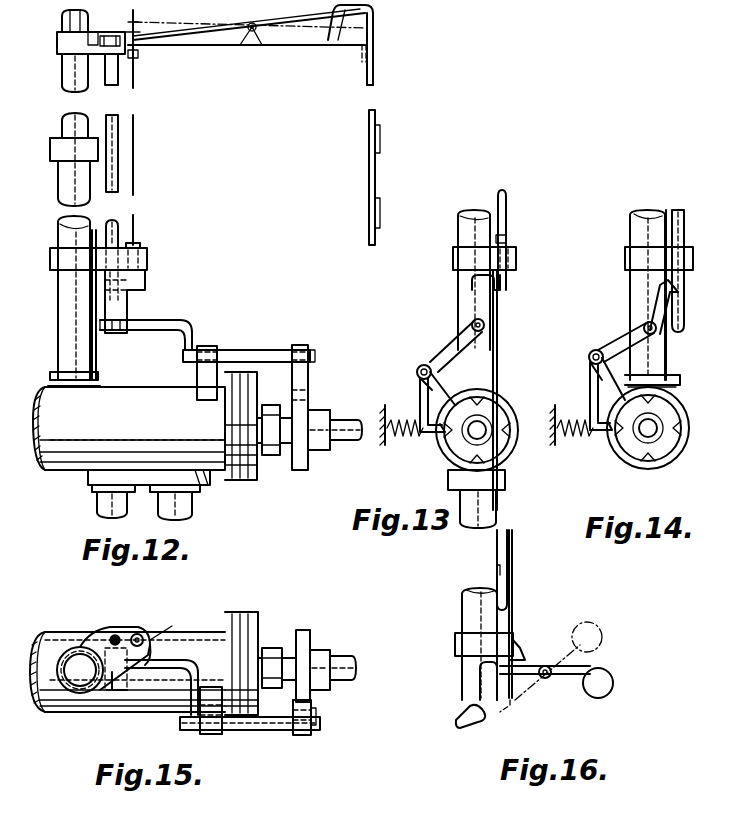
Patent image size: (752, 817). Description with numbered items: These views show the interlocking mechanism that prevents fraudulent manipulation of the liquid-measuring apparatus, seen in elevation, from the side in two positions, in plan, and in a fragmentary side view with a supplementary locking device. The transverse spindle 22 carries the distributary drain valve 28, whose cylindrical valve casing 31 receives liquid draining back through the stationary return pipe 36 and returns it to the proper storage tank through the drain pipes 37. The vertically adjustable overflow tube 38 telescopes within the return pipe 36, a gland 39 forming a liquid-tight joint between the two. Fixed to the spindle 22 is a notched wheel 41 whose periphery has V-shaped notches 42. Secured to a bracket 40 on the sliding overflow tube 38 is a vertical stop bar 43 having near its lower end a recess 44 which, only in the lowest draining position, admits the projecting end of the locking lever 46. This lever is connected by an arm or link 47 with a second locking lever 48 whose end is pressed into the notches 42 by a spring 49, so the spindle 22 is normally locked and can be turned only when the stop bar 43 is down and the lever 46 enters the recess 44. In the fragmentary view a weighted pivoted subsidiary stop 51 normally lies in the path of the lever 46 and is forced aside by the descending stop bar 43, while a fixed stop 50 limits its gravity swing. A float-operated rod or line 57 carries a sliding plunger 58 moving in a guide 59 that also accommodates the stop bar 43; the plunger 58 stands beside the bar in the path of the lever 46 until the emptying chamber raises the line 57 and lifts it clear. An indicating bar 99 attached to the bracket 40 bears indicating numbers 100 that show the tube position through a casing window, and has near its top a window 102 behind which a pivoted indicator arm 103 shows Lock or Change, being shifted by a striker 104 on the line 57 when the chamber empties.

In FIG. 12, the transverse spindle 22 is at (340, 440).
In FIG. 13, the transverse spindle 22 is at (472, 438).
In FIG. 14, the transverse spindle 22 is at (643, 435).
In FIG. 15, the transverse spindle 22 is at (352, 670).
In FIG. 12, the distributary drain valve 28 is at (50, 480).
In FIG. 15, the distributary drain valve 28 is at (55, 614).
In FIG. 12, the cylindrical valve casing 31 is at (148, 426).
In FIG. 14, the cylindrical valve casing 31 is at (690, 432).
In FIG. 15, the cylindrical valve casing 31 is at (149, 663).
In FIG. 12, the stationary return pipe 36 is at (58, 353).
In FIG. 13, the stationary return pipe 36 is at (474, 210).
In FIG. 14, the stationary return pipe 36 is at (647, 210).
In FIG. 15, the stationary return pipe 36 is at (70, 693).
In FIG. 16, the stationary return pipe 36 is at (462, 600).
In FIG. 12, the drain pipes 37 is at (160, 498).
In FIG. 12, the overflow tube 38 is at (65, 87).
In FIG. 12, the gland 39 is at (55, 150).
In FIG. 12, the bracket 40 is at (57, 45).
In FIG. 12, the notched wheel 41 is at (296, 450).
In FIG. 13, the notched wheel 41 is at (495, 405).
In FIG. 14, the notched wheel 41 is at (675, 455).
In FIG. 15, the notched wheel 41 is at (308, 635).
In FIG. 12, the notches 42 is at (306, 455).
In FIG. 13, the notches 42 is at (505, 455).
In FIG. 15, the notches 42 is at (322, 655).
In FIG. 12, the stop bar 43 is at (135, 160).
In FIG. 13, the stop bar 43 is at (507, 198).
In FIG. 14, the stop bar 43 is at (682, 212).
In FIG. 15, the stop bar 43 is at (114, 635).
In FIG. 16, the stop bar 43 is at (514, 567).
In FIG. 12, the recess 44 is at (110, 240).
In FIG. 13, the recess 44 is at (507, 238).
In FIG. 16, the recess 44 is at (496, 570).
In FIG. 12, the locking lever 46 is at (133, 290).
In FIG. 13, the locking lever 46 is at (472, 286).
In FIG. 14, the locking lever 46 is at (656, 296).
In FIG. 15, the locking lever 46 is at (120, 692).
In FIG. 16, the locking lever 46 is at (480, 680).
In FIG. 12, the arm or link 47 is at (190, 324).
In FIG. 13, the arm or link 47 is at (452, 345).
In FIG. 14, the arm or link 47 is at (618, 340).
In FIG. 15, the arm or link 47 is at (162, 690).
In FIG. 16, the arm or link 47 is at (462, 714).
In FIG. 12, the second locking lever 48 is at (308, 378).
In FIG. 13, the second locking lever 48 is at (418, 390).
In FIG. 14, the second locking lever 48 is at (590, 384).
In FIG. 15, the second locking lever 48 is at (312, 733).
In FIG. 13, the spring 49 is at (400, 435).
In FIG. 14, the spring 49 is at (568, 435).
In FIG. 16, the fixed stop 50 is at (530, 645).
In FIG. 16, the pivoted subsidiary stop 51 is at (556, 680).
In FIG. 12, the rod or line 57 is at (134, 115).
In FIG. 15, the rod or line 57 is at (172, 623).
In FIG. 12, the plunger 58 is at (141, 246).
In FIG. 15, the plunger 58 is at (139, 634).
In FIG. 12, the guide 59 is at (52, 250).
In FIG. 13, the guide 59 is at (453, 246).
In FIG. 14, the guide 59 is at (625, 250).
In FIG. 15, the guide 59 is at (98, 632).
In FIG. 12, the indicating bar 99 is at (374, 76).
In FIG. 12, the indicating numbers 100 is at (380, 200).
In FIG. 12, the window 102 is at (373, 25).
In FIG. 12, the pivoted indicator arm 103 is at (235, 40).
In FIG. 12, the striker 104 is at (138, 54).